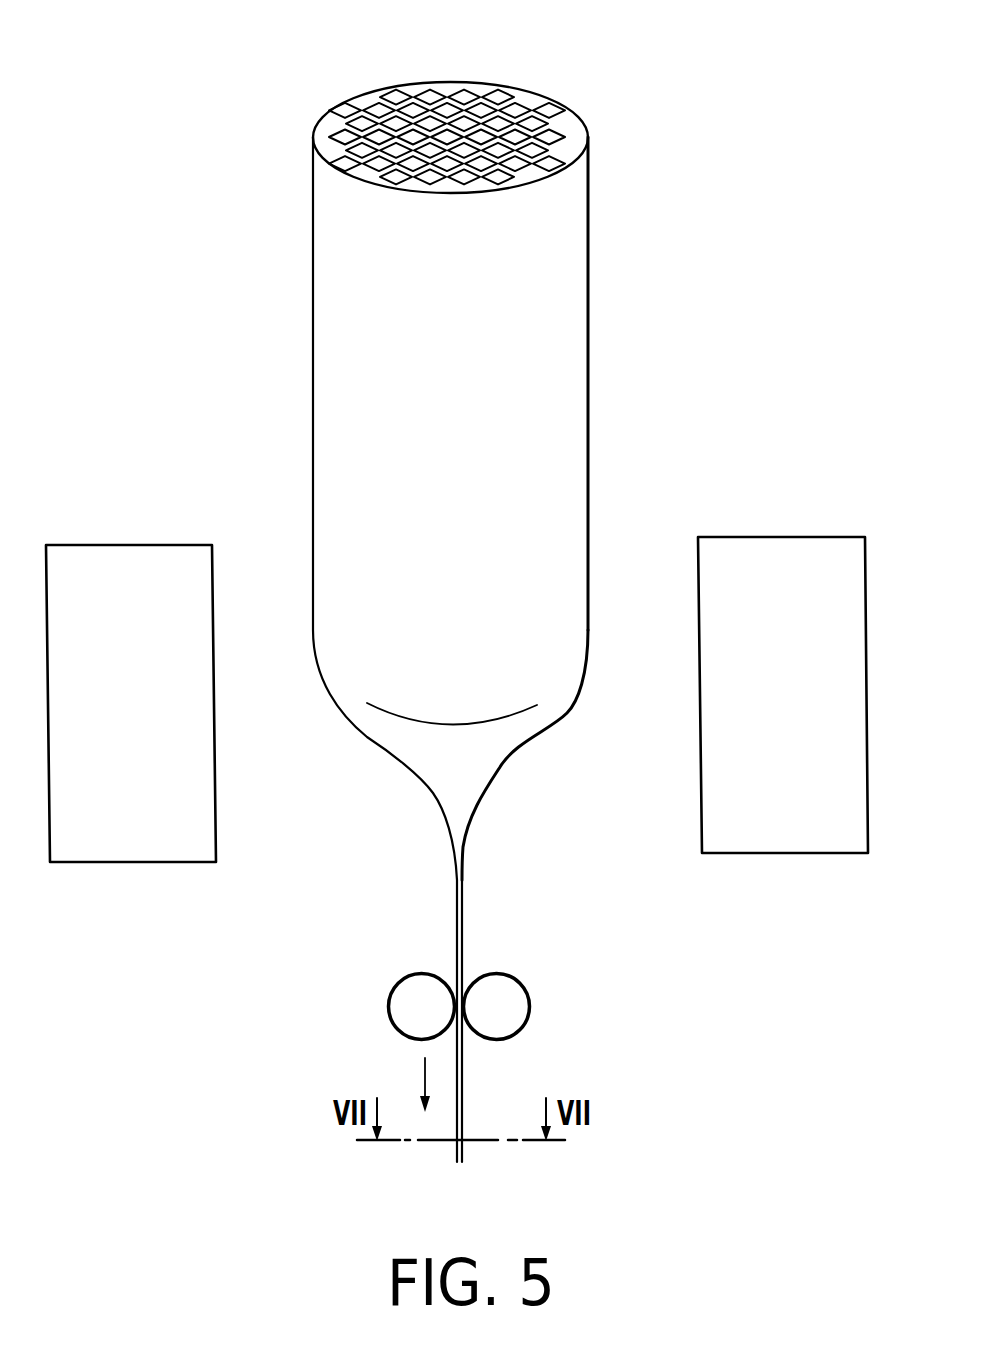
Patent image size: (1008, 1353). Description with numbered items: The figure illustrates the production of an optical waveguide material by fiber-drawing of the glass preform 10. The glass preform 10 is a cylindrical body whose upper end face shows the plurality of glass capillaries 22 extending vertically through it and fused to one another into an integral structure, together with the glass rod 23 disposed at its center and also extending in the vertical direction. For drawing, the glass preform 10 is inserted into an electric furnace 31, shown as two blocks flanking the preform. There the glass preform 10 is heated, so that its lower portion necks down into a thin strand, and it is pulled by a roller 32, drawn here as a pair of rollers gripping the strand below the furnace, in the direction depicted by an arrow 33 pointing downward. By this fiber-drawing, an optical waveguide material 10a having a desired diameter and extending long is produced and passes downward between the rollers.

The glass preform 10 is at (591, 338).
The optical waveguide material 10a is at (465, 1093).
The glass capillaries 22 is at (535, 113).
The glass rod 23 is at (450, 128).
The electric furnace 31 is at (125, 557).
The roller 32 is at (420, 990).
The arrow 33 is at (425, 1077).